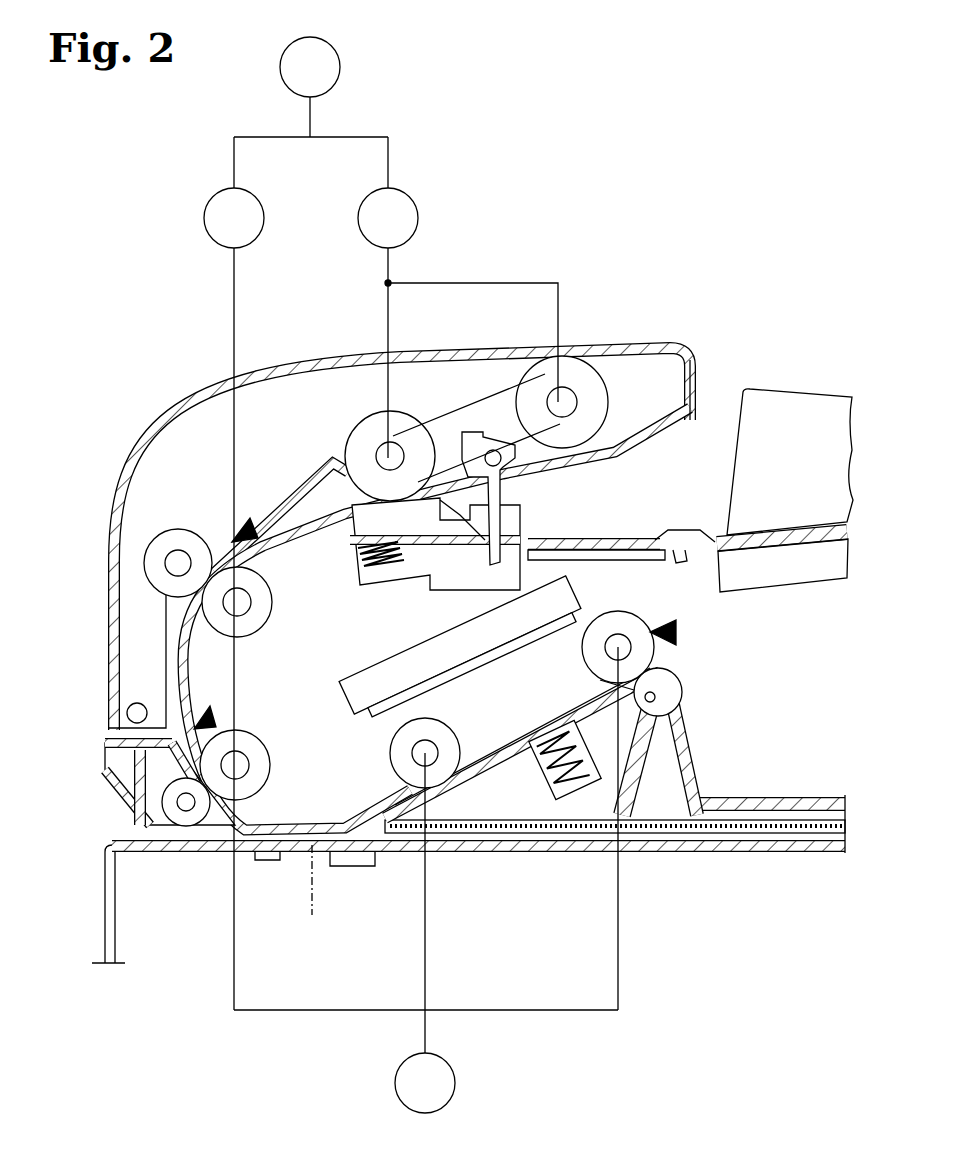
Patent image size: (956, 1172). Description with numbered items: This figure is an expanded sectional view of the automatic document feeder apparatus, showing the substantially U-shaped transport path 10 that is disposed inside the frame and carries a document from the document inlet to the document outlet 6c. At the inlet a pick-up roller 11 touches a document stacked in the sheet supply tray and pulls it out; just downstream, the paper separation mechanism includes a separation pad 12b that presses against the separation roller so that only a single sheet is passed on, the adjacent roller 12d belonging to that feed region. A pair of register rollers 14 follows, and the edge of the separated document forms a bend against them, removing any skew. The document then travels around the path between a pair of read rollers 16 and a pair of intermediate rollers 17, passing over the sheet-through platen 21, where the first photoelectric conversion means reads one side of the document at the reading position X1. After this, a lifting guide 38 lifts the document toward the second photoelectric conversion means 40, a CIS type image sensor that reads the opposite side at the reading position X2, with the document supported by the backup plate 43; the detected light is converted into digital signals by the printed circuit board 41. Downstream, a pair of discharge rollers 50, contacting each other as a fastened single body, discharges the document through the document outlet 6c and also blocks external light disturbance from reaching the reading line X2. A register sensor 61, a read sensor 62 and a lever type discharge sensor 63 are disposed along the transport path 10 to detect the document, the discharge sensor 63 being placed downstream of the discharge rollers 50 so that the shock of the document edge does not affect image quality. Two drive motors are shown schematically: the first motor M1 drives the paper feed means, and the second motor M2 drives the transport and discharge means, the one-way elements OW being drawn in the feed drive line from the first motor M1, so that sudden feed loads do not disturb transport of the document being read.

The transport path 10 is at (285, 508).
The pick-up roller 11 is at (597, 388).
The separation pad 12b is at (348, 565).
The roller 12d is at (363, 432).
The register rollers 14 is at (150, 545).
The read rollers 16 is at (183, 826).
The intermediate rollers 17 is at (390, 752).
The sheet-through platen 21 is at (292, 852).
The lifting guide 38 is at (380, 852).
The second photoelectric conversion means 40 is at (512, 760).
The printed circuit board 41 is at (433, 687).
The backup plate 43 is at (550, 730).
The discharge rollers 50 is at (627, 615).
The register sensor 61 is at (240, 528).
The read sensor 62 is at (210, 715).
The discharge sensor 63 is at (676, 632).
The document outlet 6c is at (670, 665).
The reading position X1 is at (312, 912).
The reading position X2 is at (510, 727).
The first motor M1 is at (310, 67).
The second motor M2 is at (425, 1083).
The one-way clutch OW is at (311, 218).